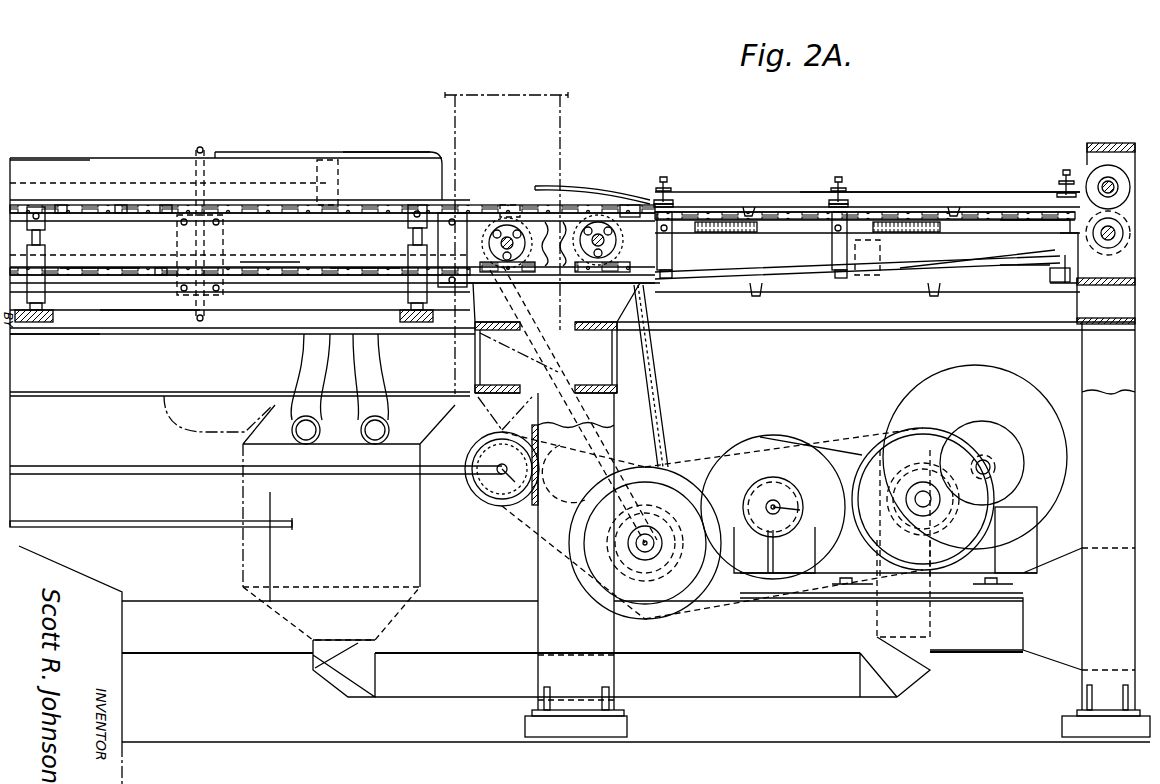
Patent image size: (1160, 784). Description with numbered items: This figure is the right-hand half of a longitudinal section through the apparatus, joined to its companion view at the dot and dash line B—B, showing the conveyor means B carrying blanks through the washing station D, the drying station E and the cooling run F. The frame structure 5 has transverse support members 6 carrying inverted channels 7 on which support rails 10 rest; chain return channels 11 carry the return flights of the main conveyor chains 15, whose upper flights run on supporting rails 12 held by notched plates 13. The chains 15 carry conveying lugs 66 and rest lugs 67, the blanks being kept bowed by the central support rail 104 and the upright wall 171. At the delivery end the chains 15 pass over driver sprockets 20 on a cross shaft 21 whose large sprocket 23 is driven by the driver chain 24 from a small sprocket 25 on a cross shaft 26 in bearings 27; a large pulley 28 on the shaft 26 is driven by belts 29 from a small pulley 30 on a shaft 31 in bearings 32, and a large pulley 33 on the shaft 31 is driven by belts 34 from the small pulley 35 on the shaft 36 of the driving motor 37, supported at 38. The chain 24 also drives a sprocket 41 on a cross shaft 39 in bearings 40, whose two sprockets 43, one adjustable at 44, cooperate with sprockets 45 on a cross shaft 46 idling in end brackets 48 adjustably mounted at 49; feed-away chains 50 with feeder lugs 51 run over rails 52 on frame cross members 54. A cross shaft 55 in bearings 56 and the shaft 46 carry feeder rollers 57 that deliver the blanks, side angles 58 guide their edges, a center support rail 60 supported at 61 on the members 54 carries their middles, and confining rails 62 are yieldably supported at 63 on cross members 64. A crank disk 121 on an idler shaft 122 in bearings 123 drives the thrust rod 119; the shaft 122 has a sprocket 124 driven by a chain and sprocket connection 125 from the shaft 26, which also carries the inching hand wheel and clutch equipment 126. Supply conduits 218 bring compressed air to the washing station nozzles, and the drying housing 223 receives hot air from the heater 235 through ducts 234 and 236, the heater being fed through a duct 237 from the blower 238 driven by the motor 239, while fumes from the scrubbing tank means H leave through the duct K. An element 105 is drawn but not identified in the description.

The feeding or conveyor means B is at (10, 158).
The water washing station D is at (98, 190).
The hot drying station E is at (290, 152).
The cooling run F is at (905, 192).
The scrubbing tank means H is at (273, 547).
The duct K is at (560, 140).
The frame structure 5 is at (535, 585).
The transverse support members 6 is at (37, 322).
The support channels 7 is at (65, 330).
The longitudinal support rails 10 is at (135, 300).
The chain return channels 11 is at (95, 268).
The supporting rails 12 is at (275, 262).
The notched plates 13 is at (225, 245).
The main conveyor chains 15 is at (355, 268).
The driver sprockets 20 is at (598, 200).
The cross shaft 21 is at (628, 205).
The large sprocket 23 is at (672, 245).
The driver chain 24 is at (664, 420).
The small sprocket 25 is at (682, 500).
The cross shaft 26 is at (628, 560).
The frame supported bearings 27 is at (638, 485).
The large pulley 28 is at (700, 605).
The belts 29 is at (748, 485).
The small pulley 30 is at (770, 487).
The shaft 31 is at (780, 504).
The frame supported bearings 32 is at (800, 508).
The large pulley 33 is at (748, 441).
The belts 34 is at (906, 440).
The small pulley 35 is at (937, 445).
The motor shaft 36 is at (936, 510).
The driving motor 37 is at (962, 450).
The motor support 38 is at (997, 556).
The cross shaft 39 is at (495, 215).
The frame supported bearings 40 is at (512, 205).
The sprocket 41 is at (585, 268).
The sprockets 43 is at (548, 268).
The adjustment 44 is at (503, 272).
The sprockets 45 is at (1062, 283).
The cross shaft 46 is at (1110, 270).
The end brackets 48 is at (1120, 143).
The adjustable mounting 49 is at (1012, 280).
The feed-away chains 50 is at (972, 207).
The feeder lugs 51 is at (748, 207).
The rails 52 is at (1002, 216).
The frame cross members 54 is at (668, 280).
The cross shaft 55 is at (1098, 180).
The bearings 56 is at (1108, 178).
The feeder rollers 57 is at (1125, 233).
The side angles 58 is at (815, 192).
The center support rail 60 is at (862, 262).
The rail support 61 is at (672, 262).
The confining rails 62 is at (770, 210).
The yielding support 63 is at (674, 203).
The cross members 64 is at (670, 178).
The blank holding and conveying lugs 66 is at (60, 205).
The rest lug 67 is at (120, 205).
The central support rail 104 is at (166, 205).
The cylinder 105 is at (46, 248).
The thrust rod 119 is at (372, 470).
The crank disk 121 is at (465, 487).
The idler shaft 122 is at (497, 476).
The frame supported bearings 123 is at (538, 445).
The sprocket 124 is at (535, 505).
The chain and sprocket connection 125 is at (540, 540).
The inching hand wheel and clutch equipment 126 is at (600, 605).
The longitudinal upright wall 171 is at (58, 158).
The supply conduits 218 is at (200, 150).
The drying housing 223 is at (392, 152).
The duct 234 is at (330, 190).
The heater 235 is at (420, 448).
The duct 236 is at (293, 412).
The duct 237 is at (621, 618).
The blower 238 is at (1000, 378).
The motor 239 is at (1000, 445).